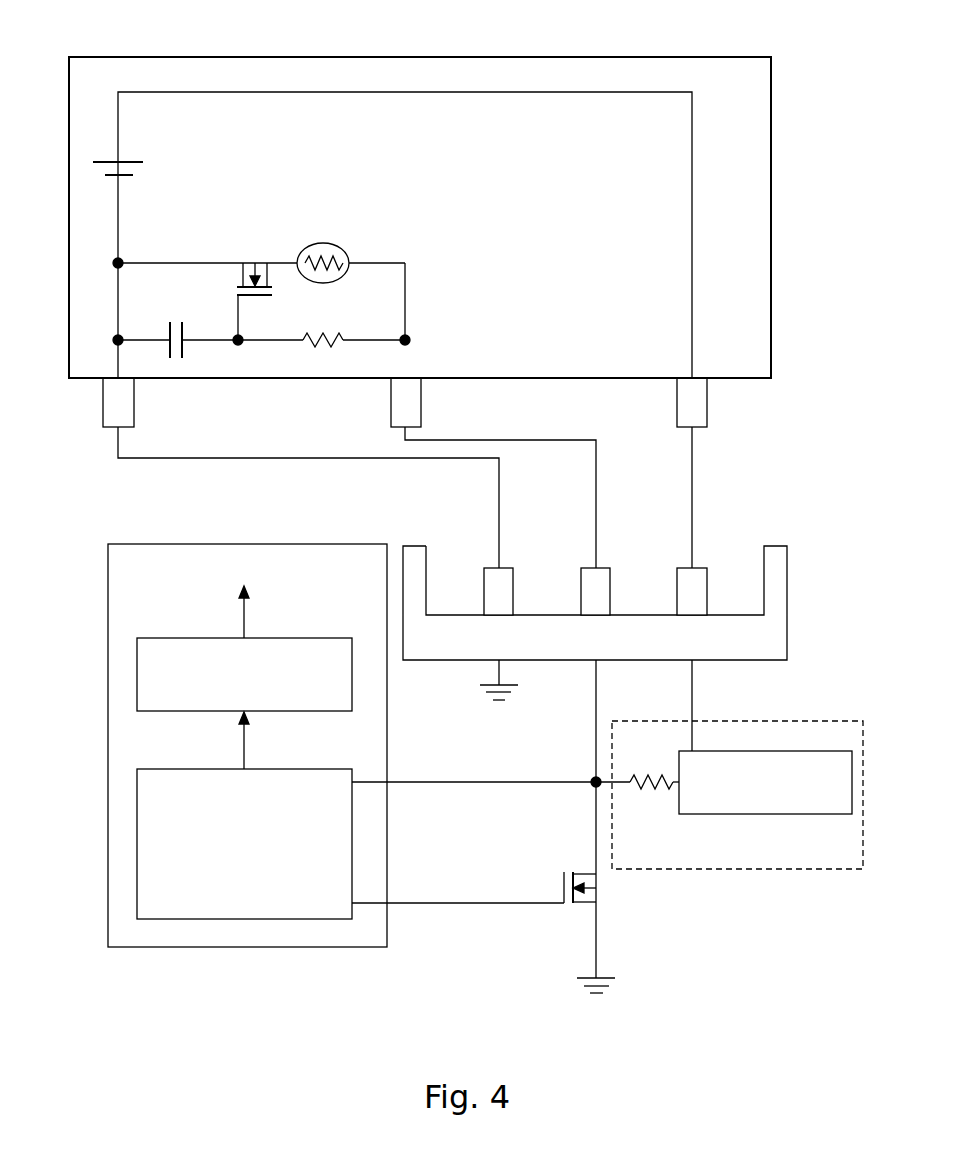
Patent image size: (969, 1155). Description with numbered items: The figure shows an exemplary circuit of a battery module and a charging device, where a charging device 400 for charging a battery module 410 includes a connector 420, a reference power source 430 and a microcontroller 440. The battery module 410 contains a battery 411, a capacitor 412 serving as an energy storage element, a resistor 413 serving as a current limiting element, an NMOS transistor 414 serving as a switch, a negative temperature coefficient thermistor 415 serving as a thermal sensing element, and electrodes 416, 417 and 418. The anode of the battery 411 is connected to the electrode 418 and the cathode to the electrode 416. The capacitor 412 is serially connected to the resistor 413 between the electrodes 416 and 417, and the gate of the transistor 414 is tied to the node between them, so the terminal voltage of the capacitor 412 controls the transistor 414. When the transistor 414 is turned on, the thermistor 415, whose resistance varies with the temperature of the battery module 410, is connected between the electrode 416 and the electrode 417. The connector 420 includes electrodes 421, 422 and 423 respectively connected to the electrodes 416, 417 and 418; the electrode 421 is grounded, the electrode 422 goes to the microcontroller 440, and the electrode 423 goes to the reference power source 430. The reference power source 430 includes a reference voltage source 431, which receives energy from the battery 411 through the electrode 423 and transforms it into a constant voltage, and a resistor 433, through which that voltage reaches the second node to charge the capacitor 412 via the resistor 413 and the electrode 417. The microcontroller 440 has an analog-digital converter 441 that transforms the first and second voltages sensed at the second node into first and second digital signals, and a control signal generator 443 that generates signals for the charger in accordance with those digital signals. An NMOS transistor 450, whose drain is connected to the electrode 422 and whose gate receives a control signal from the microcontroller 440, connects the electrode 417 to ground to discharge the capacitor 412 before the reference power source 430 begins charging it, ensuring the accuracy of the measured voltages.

The charging device 400 is at (826, 35).
The battery module 410 is at (757, 86).
The battery 411 is at (138, 168).
The capacitor 412 is at (176, 320).
The resistor 413 is at (340, 332).
The NMOS transistor 414 is at (254, 258).
The negative temperature coefficient thermistor 415 is at (327, 242).
The electrode 416 is at (134, 401).
The electrode 417 is at (421, 401).
The electrode 418 is at (707, 401).
The connector 420 is at (768, 648).
The electrode 421 is at (513, 593).
The electrode 422 is at (610, 593).
The electrode 423 is at (707, 593).
The reference power source 430 is at (659, 850).
The reference voltage source 431 is at (749, 814).
The resistor 433 is at (646, 775).
The microcontroller 440 is at (382, 572).
The analog-digital converter 441 is at (325, 769).
The control signal generator 443 is at (325, 638).
The NMOS transistor 450 is at (601, 889).